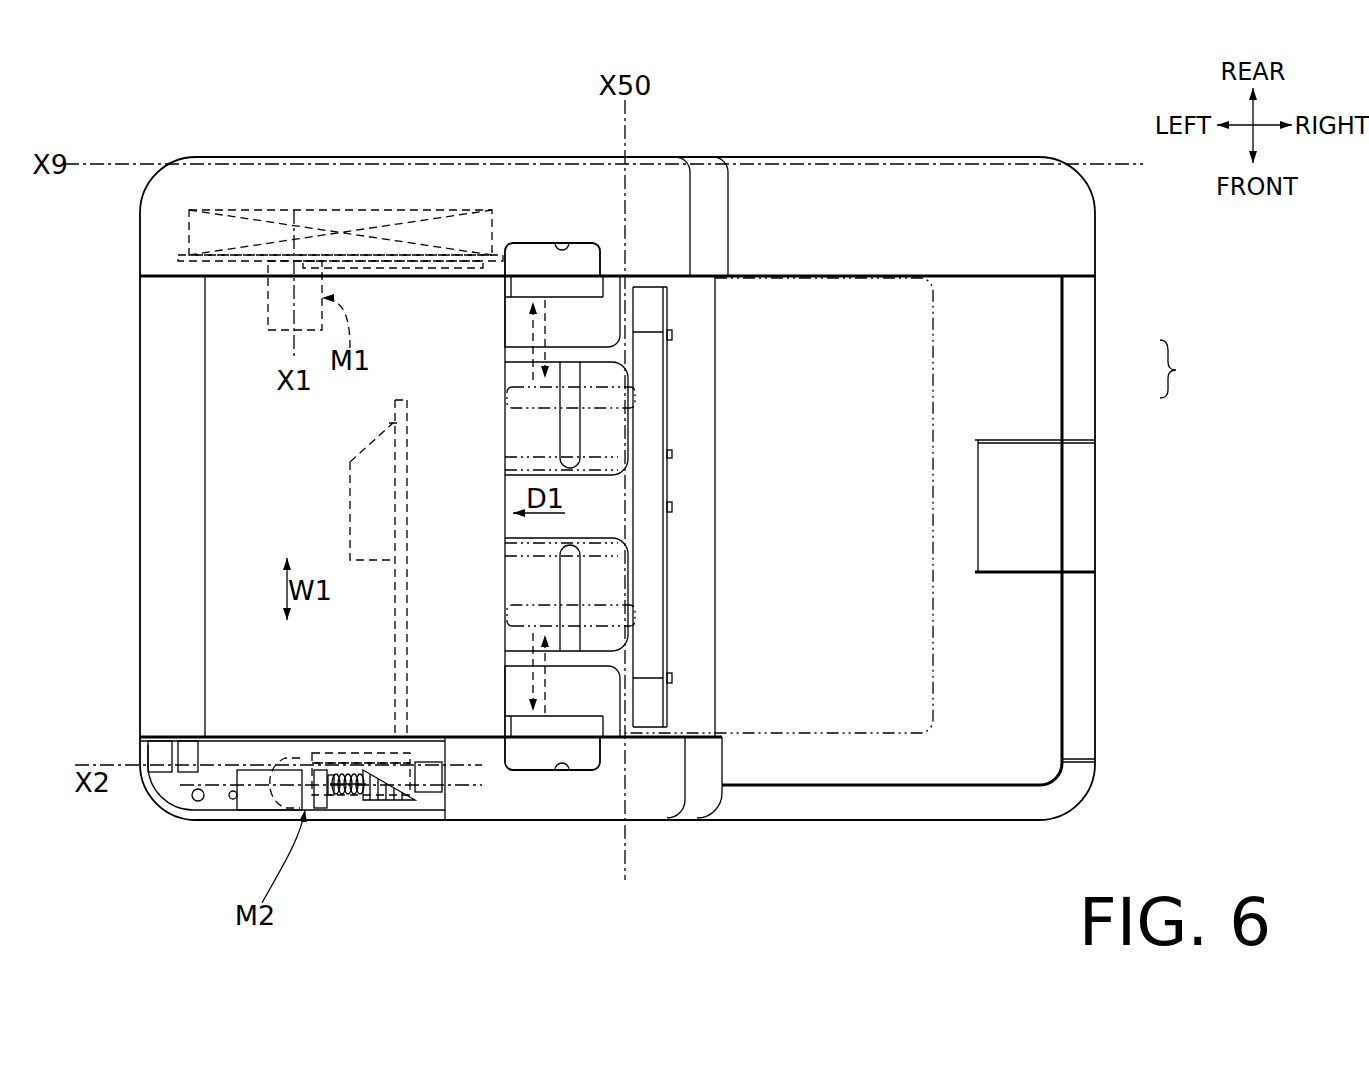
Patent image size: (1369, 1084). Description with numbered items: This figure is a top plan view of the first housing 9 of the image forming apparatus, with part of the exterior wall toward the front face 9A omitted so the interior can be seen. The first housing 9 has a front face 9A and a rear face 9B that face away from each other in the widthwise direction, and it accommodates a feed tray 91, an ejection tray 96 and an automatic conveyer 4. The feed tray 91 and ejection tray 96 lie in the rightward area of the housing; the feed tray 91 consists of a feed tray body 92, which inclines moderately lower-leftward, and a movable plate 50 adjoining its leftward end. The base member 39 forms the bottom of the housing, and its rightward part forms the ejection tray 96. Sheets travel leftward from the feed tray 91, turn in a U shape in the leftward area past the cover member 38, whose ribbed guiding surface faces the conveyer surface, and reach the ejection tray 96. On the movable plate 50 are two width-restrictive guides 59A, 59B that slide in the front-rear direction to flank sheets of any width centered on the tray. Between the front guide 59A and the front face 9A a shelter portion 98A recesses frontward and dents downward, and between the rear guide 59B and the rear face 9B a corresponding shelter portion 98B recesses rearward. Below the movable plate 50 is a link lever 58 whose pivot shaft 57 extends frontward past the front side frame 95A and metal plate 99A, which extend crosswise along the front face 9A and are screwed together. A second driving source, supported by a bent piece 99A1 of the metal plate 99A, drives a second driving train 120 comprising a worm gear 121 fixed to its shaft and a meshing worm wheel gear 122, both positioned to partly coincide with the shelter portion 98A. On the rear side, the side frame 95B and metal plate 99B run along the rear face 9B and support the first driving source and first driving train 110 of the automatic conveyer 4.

The first housing 9 is at (963, 137).
The front face 9A is at (518, 820).
The rear face 9B is at (517, 157).
The automatic conveyer 4 is at (258, 435).
The cover member 38 is at (257, 533).
The base member 39 is at (1068, 713).
The movable plate 50 is at (585, 505).
The pivot shaft 57 is at (400, 603).
The link lever 58 is at (350, 523).
The width-restrictive guide 59A is at (593, 615).
The width-restrictive guide 59B is at (570, 290).
The feed tray 91 is at (1185, 369).
The feed tray body 92 is at (933, 357).
The side frame 95A is at (215, 775).
The side frame 95B is at (462, 270).
The ejection tray 96 is at (983, 630).
The shelter portion 98A is at (562, 768).
The shelter portion 98B is at (560, 250).
The metal plate 99A is at (425, 748).
The bent piece 99A1 is at (327, 790).
The metal plate 99B is at (172, 258).
The first driving train 110 is at (343, 207).
The second driving train 120 is at (360, 803).
The worm gear 121 is at (342, 790).
The worm wheel gear 122 is at (377, 805).